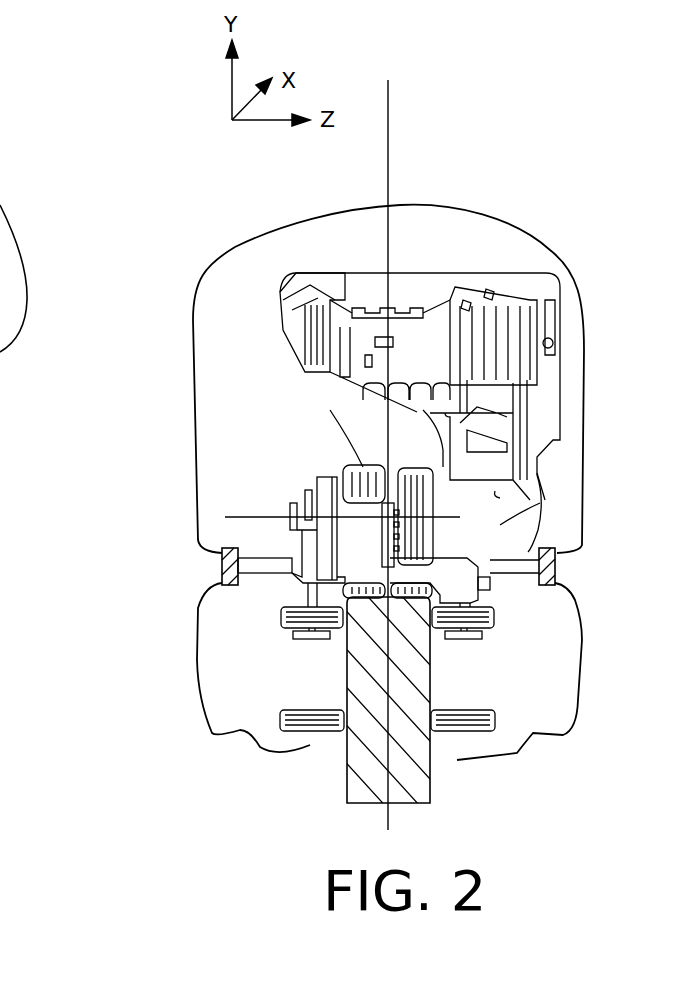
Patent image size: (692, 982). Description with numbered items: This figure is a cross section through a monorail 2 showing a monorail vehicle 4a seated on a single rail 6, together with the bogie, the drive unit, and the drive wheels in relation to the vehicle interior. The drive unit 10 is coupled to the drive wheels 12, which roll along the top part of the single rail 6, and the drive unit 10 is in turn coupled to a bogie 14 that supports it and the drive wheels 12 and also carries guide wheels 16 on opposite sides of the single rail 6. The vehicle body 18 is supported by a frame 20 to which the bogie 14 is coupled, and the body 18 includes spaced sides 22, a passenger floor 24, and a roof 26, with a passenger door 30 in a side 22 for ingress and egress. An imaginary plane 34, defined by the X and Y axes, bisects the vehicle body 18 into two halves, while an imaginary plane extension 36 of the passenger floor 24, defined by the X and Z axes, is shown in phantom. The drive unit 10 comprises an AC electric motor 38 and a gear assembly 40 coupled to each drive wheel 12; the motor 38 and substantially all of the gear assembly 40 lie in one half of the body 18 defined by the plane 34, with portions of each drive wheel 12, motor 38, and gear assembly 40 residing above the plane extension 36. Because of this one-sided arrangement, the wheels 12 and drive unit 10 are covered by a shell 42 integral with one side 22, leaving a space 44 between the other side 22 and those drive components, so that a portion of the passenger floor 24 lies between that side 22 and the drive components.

The monorail 2 is at (557, 562).
The monorail vehicle 4a is at (560, 240).
The single rail 6 is at (410, 773).
The drive unit 10 is at (284, 478).
The drive wheel 12 is at (363, 465).
The bogie 14 is at (303, 570).
The guide wheel 16 is at (497, 620).
The vehicle body 18 is at (590, 368).
The frame 20 is at (222, 553).
The side 22 is at (290, 303).
The passenger floor 24 is at (540, 503).
The roof 26 is at (413, 220).
The passenger door 30 is at (525, 300).
The imaginary plane 34 is at (388, 140).
The imaginary plane extension 36 is at (247, 517).
The AC electric motor 38 is at (296, 456).
The gear assembly 40 is at (396, 495).
The shell 42 is at (416, 405).
The space 44 is at (510, 490).